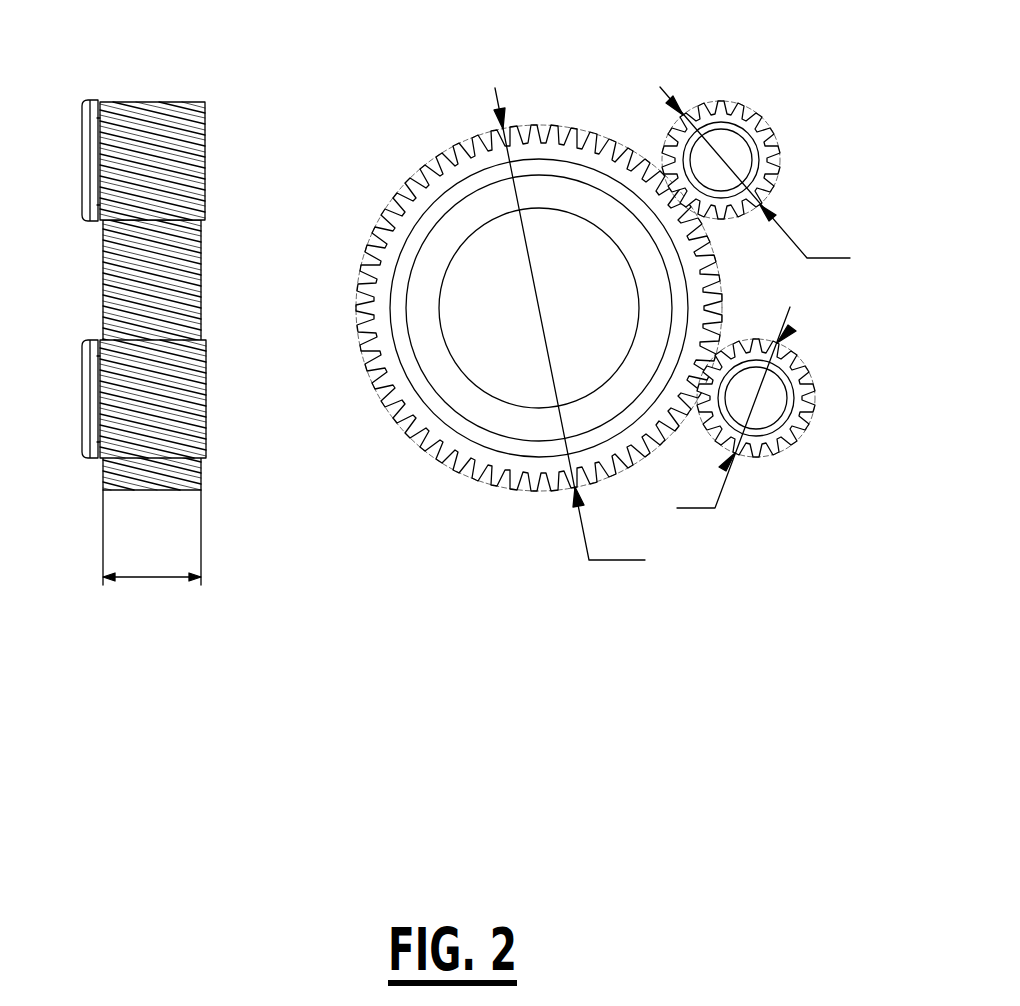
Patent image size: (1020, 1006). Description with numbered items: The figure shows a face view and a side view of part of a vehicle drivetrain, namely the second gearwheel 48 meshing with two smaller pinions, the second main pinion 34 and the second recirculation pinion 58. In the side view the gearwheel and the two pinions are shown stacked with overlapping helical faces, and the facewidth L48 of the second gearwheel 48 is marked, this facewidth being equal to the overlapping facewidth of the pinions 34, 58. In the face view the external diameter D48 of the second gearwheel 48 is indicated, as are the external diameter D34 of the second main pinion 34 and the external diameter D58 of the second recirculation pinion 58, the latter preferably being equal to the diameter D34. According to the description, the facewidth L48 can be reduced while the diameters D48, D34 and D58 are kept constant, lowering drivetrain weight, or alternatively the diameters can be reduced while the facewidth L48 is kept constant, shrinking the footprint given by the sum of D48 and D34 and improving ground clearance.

The second gearwheel 48 is at (203, 288).
The second recirculation pinion 58 is at (207, 145).
The second main pinion 34 is at (207, 388).
The facewidth of the second gearwheel L48 is at (152, 537).
The external diameter of the second gearwheel D48 is at (569, 324).
The external diameter of the second recirculation pinion D58 is at (755, 173).
The external diameter of the second main pinion D34 is at (736, 408).